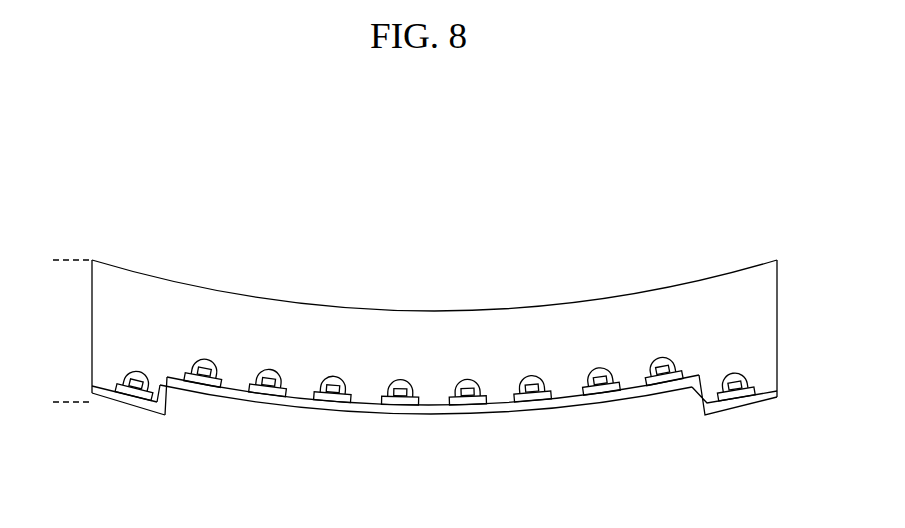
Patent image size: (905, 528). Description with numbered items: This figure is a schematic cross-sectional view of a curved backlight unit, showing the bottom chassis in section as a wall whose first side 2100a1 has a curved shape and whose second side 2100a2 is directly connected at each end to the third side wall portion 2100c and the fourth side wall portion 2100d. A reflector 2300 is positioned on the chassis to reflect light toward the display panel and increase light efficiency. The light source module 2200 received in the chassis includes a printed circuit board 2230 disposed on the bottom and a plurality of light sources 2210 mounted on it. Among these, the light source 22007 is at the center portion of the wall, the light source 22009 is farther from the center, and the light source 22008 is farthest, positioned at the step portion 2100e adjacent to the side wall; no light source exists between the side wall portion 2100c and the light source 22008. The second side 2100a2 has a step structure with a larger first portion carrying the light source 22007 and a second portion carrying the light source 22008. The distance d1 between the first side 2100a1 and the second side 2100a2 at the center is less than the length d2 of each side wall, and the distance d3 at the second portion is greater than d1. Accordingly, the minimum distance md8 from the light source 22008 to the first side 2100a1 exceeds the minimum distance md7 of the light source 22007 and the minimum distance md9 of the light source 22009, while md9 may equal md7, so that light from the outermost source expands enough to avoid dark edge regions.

The third side wall portion 2100c is at (91, 276).
The fourth side wall portion 2100d is at (777, 277).
The first side 2100a1 is at (489, 309).
The second side 2100a2 is at (348, 415).
The step portion 2100e is at (125, 408).
The reflector 2300 is at (298, 391).
The light source module 2200 is at (632, 468).
The light source 2210 is at (602, 388).
The printed circuit board 2230 is at (589, 394).
The light source 22007 is at (403, 403).
The light source 22008 is at (125, 390).
The light source 22009 is at (262, 390).
The distance d1 is at (434, 311).
The distance d2 is at (62, 260).
The distance d3 is at (177, 283).
The minimum distance md7 is at (400, 311).
The minimum distance md8 is at (158, 282).
The minimum distance md9 is at (277, 300).